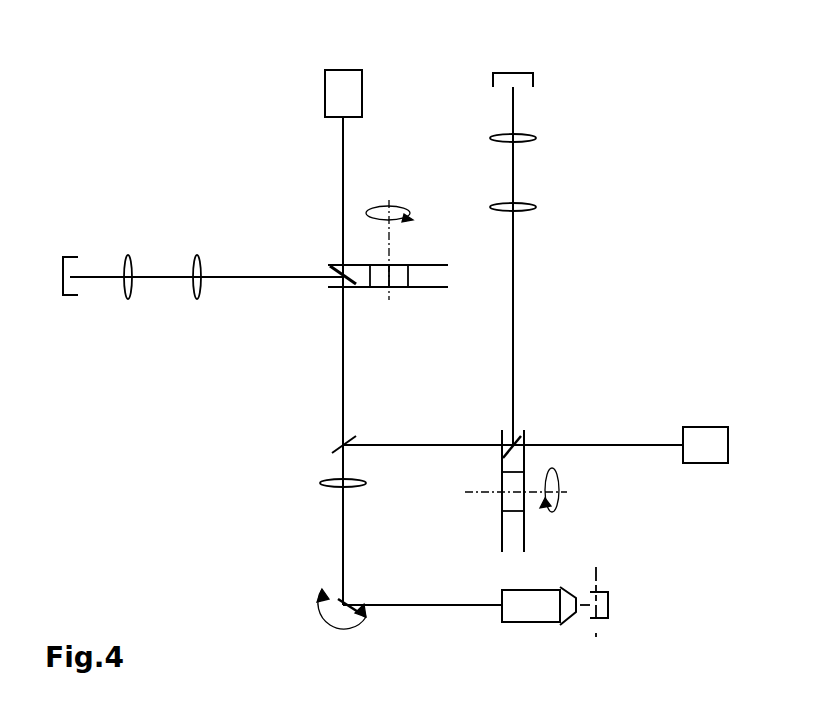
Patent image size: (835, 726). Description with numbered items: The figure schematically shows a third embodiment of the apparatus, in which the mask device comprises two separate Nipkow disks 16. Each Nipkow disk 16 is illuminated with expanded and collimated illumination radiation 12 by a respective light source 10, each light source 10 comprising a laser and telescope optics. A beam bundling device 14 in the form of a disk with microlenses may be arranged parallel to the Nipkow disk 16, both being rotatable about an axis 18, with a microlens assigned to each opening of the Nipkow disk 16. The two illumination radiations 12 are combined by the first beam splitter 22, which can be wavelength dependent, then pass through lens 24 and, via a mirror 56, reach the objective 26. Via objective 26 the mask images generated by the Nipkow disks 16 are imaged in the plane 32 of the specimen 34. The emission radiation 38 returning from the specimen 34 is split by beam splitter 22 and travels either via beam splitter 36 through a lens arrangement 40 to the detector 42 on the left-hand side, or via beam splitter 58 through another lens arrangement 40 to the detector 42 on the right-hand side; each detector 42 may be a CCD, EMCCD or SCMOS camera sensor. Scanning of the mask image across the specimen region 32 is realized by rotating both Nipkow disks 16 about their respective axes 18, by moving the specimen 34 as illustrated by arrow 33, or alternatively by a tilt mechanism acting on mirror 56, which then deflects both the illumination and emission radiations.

The light source 10 is at (332, 100).
The illumination radiation 12 is at (343, 160).
The beam bundling device 14 is at (418, 265).
The Nipkow disk 16 is at (360, 290).
The axis 18 is at (402, 212).
The first beam splitter 22 is at (340, 448).
The lens 24 is at (367, 483).
The objective 26 is at (518, 608).
The plane of specimen 32 is at (598, 580).
The arrow 33 is at (318, 628).
The specimen 34 is at (608, 608).
The beam splitter 36 is at (348, 268).
The emission radiation 38 is at (255, 275).
The lens arrangement 40 is at (128, 255).
The detector 42 is at (63, 265).
The mirror 56 is at (340, 598).
The beam splitter 58 is at (513, 440).